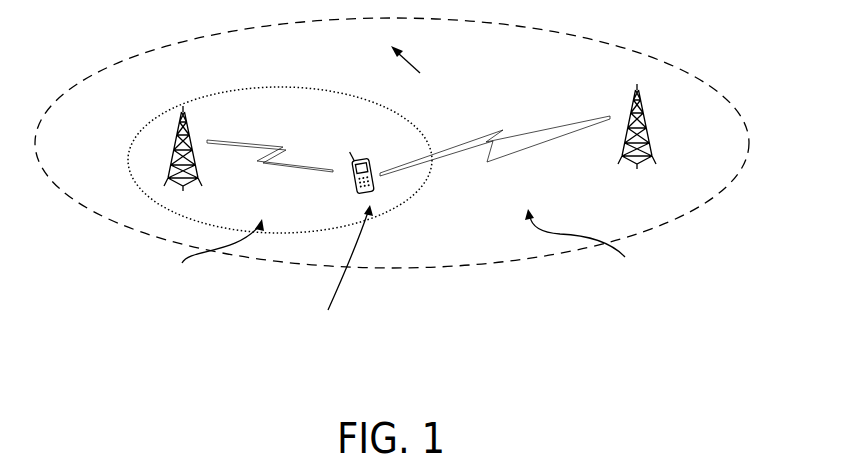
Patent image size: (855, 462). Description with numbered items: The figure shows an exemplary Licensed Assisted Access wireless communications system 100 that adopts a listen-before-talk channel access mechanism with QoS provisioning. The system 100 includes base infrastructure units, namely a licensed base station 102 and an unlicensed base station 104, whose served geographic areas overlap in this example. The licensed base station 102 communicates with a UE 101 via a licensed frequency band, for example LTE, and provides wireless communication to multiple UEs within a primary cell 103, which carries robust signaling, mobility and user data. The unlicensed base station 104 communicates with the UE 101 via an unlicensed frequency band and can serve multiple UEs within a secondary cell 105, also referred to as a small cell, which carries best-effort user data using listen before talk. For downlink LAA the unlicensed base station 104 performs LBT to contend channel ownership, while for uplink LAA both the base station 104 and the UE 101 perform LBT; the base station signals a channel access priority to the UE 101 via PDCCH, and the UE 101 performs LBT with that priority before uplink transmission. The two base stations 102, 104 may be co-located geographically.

The Licensed Assisted Access wireless communications system 100 is at (97, 38).
The UE 101 is at (354, 151).
The base station 102 is at (636, 94).
The primary cell 103 is at (687, 71).
The base station 104 is at (186, 120).
The secondary cell 105 is at (360, 97).